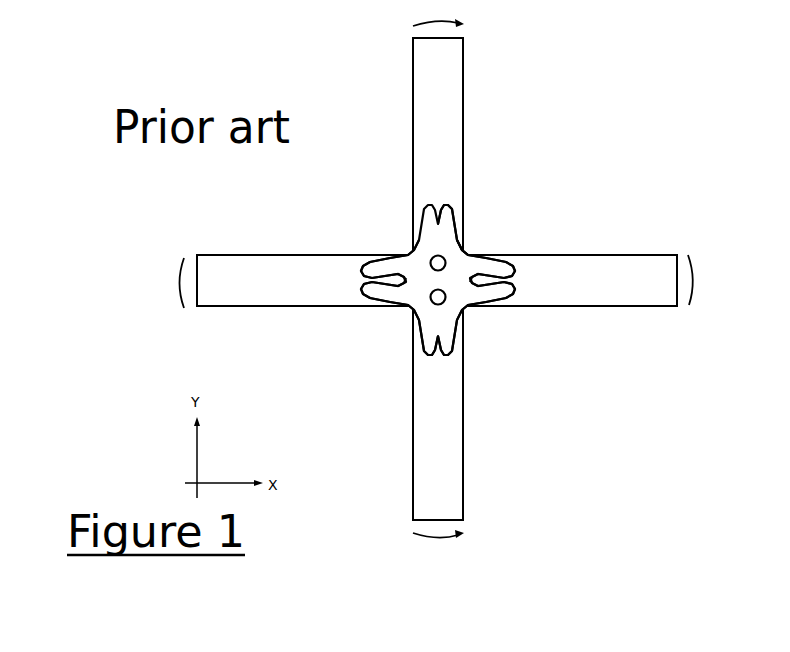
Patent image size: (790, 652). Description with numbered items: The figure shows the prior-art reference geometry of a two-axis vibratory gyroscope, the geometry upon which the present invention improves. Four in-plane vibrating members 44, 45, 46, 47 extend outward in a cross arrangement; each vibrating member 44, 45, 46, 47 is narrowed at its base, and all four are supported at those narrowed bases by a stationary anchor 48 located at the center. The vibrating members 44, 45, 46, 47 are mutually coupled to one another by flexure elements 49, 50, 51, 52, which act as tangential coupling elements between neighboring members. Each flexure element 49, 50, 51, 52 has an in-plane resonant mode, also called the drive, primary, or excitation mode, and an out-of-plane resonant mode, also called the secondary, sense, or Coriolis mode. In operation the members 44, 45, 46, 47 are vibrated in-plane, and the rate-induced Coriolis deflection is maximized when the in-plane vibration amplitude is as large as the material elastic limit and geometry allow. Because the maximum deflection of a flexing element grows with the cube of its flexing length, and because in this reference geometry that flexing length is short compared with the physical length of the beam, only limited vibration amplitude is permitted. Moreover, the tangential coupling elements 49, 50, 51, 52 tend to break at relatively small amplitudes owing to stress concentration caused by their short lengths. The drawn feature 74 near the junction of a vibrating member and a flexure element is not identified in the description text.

The upper blade 44 is at (463, 130).
The lower blade 45 is at (463, 444).
The left blade 46 is at (270, 256).
The right blade 47 is at (595, 254).
The hub finger 48 is at (457, 214).
The hub finger 49 is at (405, 250).
The hub finger 50 is at (466, 246).
The hub finger 51 is at (468, 311).
The hub finger 52 is at (408, 308).
The blade edge 74 is at (483, 253).